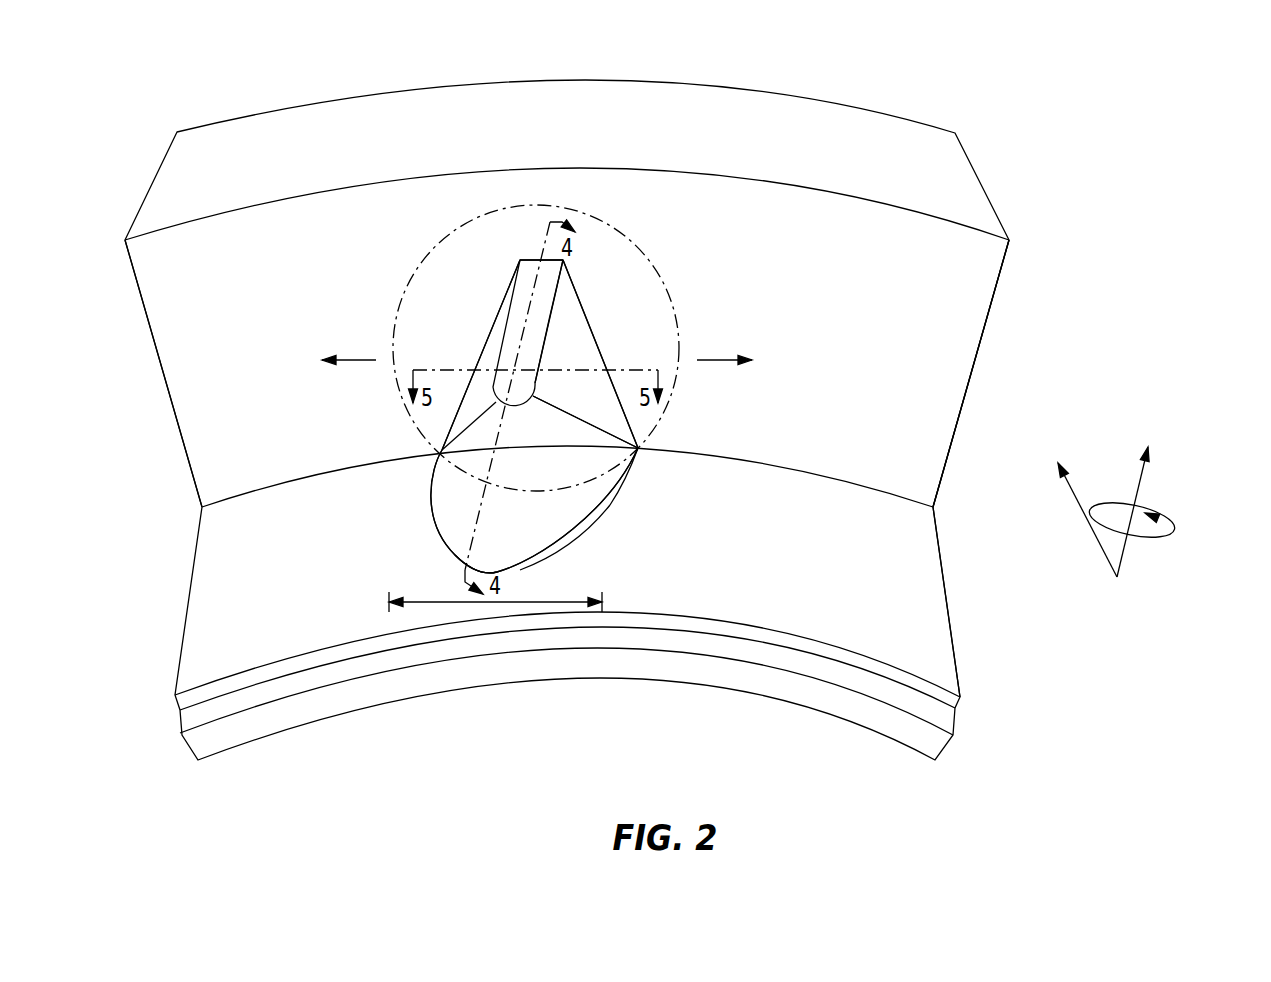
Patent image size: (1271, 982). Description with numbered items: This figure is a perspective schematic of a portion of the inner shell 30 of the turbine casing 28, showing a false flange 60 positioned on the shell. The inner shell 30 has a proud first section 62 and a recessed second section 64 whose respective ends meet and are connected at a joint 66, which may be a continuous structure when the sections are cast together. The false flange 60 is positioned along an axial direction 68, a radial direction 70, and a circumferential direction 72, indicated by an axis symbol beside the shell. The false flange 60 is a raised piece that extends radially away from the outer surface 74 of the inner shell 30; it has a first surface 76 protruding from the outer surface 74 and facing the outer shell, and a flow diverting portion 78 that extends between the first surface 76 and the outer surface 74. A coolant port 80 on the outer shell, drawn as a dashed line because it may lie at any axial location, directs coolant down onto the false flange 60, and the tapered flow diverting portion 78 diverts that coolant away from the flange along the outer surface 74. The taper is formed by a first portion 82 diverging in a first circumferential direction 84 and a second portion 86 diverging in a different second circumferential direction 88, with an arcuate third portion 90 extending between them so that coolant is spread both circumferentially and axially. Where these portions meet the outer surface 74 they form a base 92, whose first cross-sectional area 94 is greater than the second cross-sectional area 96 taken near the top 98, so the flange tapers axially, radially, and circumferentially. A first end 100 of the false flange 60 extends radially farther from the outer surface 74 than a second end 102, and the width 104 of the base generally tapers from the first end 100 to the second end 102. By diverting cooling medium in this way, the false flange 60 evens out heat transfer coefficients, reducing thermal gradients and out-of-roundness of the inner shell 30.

The casing 28 is at (910, 87).
The inner shell 30 is at (997, 289).
The false flange 60 is at (443, 538).
The first section 62 is at (957, 433).
The second section 64 is at (950, 617).
The joint 66 is at (935, 507).
The axial direction 68 is at (1088, 512).
The radial direction 70 is at (1140, 487).
The circumferential direction 72 is at (1173, 530).
The outer surface 74 is at (170, 337).
The first surface 76 is at (567, 272).
The flow diverting portion 78 is at (551, 525).
The coolant port 80 is at (437, 247).
The first portion 82 is at (455, 418).
The first circumferential direction 84 is at (354, 360).
The second portion 86 is at (612, 413).
The second circumferential direction 88 is at (720, 360).
The third portion 90 is at (533, 543).
The base 92 is at (627, 478).
The first cross-sectional area 94 is at (613, 503).
The second cross-sectional area 96 is at (550, 330).
The top 98 is at (552, 276).
The first end 100 is at (458, 567).
The second end 102 is at (512, 259).
The width 104 is at (571, 601).